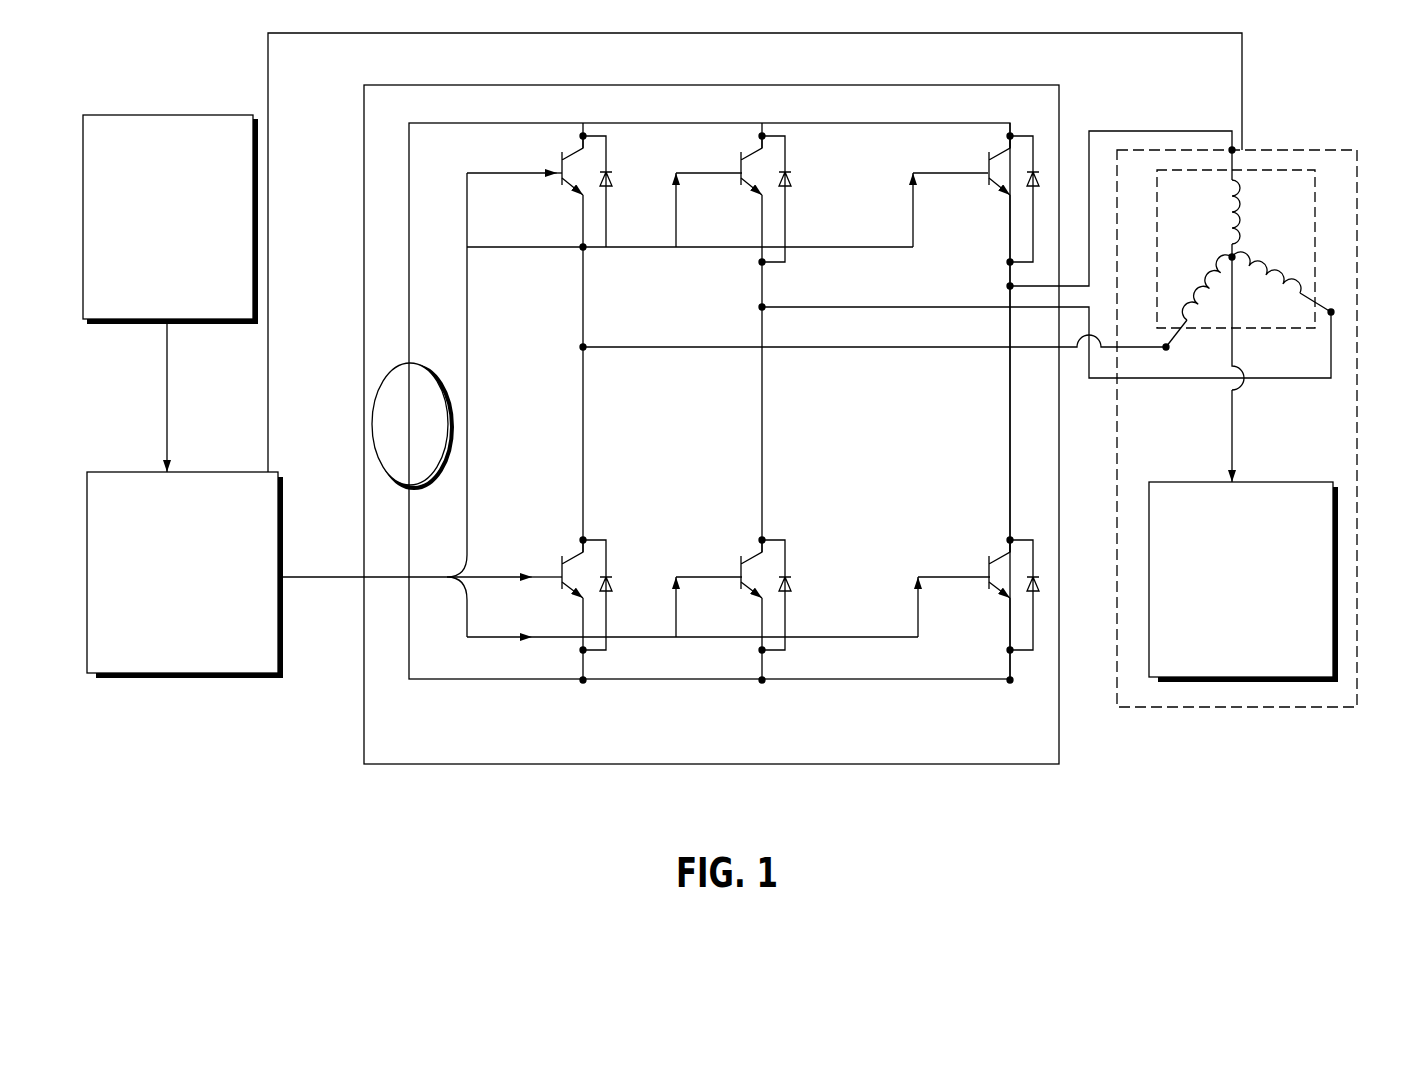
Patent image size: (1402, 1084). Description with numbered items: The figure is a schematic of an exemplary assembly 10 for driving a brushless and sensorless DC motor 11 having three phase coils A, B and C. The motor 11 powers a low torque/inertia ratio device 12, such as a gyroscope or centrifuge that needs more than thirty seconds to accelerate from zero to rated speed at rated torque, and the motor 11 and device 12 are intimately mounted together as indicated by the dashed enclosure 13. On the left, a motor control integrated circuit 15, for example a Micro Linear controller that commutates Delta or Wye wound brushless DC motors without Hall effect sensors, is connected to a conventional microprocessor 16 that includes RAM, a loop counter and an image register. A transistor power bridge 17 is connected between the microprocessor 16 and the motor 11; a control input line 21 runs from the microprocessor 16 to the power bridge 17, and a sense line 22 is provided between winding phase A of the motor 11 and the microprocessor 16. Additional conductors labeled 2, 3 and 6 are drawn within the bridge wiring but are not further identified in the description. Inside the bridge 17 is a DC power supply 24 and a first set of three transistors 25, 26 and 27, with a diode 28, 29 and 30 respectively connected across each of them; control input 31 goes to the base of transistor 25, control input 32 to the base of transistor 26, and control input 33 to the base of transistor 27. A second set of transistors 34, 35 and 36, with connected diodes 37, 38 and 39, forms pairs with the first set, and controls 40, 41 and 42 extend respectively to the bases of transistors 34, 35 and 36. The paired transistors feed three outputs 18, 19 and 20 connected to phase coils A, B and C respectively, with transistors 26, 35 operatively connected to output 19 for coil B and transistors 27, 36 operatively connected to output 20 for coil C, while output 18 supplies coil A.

The signal line 2 is at (488, 248).
The signal line 3 is at (469, 427).
The control line 6 is at (300, 577).
The assembly 10 is at (1212, 90).
The brushless and sensorless DC motor 11 is at (1273, 163).
The low torque/inertia ratio device 12 is at (1283, 683).
The intimate mounting 13 is at (1357, 470).
The motor control integrated circuit 15 is at (181, 133).
The microprocessor 16 is at (207, 663).
The transistor power bridge 17 is at (822, 767).
The output 18 is at (1066, 286).
The output 19 is at (1035, 307).
The output 20 is at (1073, 347).
The control input line 21 is at (340, 577).
The sense line 22 is at (492, 35).
The DC power supply 24 is at (372, 424).
The transistor 25 is at (555, 202).
The transistor 26 is at (746, 198).
The transistor 27 is at (960, 198).
The diode 28 is at (612, 205).
The diode 29 is at (792, 198).
The diode 30 is at (1033, 170).
The control input 31 is at (508, 172).
The control input 32 is at (720, 174).
The control input 33 is at (927, 173).
The transistor 34 is at (568, 603).
The transistor 35 is at (748, 602).
The transistor 36 is at (973, 588).
The diode 37 is at (617, 560).
The diode 38 is at (820, 557).
The diode 39 is at (1025, 532).
The control 40 is at (492, 580).
The control 41 is at (692, 580).
The control 42 is at (935, 580).